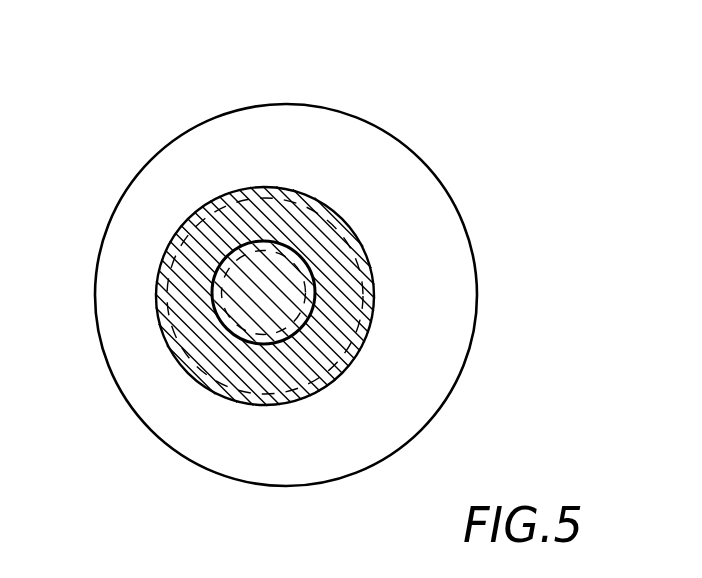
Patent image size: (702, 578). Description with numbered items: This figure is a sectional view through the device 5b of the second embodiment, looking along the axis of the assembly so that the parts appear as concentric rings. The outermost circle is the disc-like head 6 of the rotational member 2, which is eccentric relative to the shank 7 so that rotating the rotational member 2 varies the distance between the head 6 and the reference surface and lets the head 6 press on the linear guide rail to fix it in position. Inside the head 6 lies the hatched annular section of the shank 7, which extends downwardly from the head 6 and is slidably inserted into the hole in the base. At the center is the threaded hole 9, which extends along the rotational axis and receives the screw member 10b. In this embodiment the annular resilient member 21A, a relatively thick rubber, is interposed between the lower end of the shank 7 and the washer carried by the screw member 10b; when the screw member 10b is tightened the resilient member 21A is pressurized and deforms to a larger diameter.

The rotational member 2 is at (303, 151).
The device 5b is at (440, 142).
The head 6 is at (448, 240).
The annular resilient member 21A is at (373, 319).
The shank 7 is at (357, 357).
The threaded hole 9 is at (232, 312).
The screw member 10b is at (268, 325).